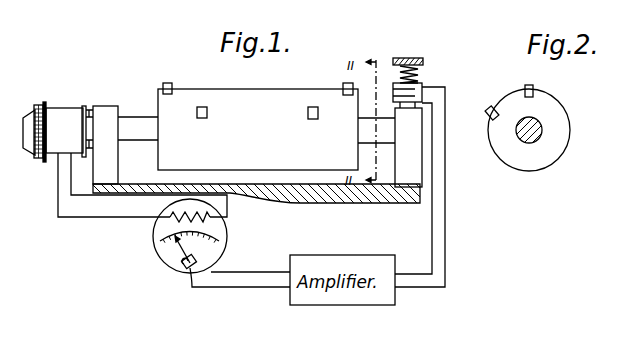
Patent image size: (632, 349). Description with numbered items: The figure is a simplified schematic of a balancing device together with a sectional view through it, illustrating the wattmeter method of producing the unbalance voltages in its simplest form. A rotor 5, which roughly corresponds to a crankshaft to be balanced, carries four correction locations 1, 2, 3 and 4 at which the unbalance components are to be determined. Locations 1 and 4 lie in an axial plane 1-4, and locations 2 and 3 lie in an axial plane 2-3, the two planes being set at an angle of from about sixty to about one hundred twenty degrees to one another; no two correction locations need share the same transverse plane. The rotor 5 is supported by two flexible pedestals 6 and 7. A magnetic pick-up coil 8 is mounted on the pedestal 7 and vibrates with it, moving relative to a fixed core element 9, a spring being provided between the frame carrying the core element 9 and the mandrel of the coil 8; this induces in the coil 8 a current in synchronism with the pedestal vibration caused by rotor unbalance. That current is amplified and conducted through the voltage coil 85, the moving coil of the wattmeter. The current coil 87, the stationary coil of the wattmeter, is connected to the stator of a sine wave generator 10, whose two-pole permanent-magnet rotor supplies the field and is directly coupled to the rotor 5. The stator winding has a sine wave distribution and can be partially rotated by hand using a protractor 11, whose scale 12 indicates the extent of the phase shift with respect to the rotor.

In FIG. 1, the correction location 1 is at (172, 91).
In FIG. 1, the correction location 2 is at (207, 113).
In FIG. 1, the correction location 3 is at (318, 113).
In FIG. 1, the correction location 4 is at (343, 87).
In FIG. 1, the rotor 5 is at (165, 107).
In FIG. 2, the rotor 5 is at (550, 111).
In FIG. 1, the flexible pedestal 6 is at (108, 165).
In FIG. 1, the flexible pedestal 7 is at (412, 163).
In FIG. 1, the magnetic pick-up coil 8 is at (423, 90).
In FIG. 1, the fixed core element 9 is at (413, 83).
In FIG. 1, the sine wave generator 10 is at (60, 118).
In FIG. 1, the protractor 11 is at (28, 118).
In FIG. 1, the scale 12 is at (33, 110).
In FIG. 1, the voltage coil 85 is at (178, 284).
In FIG. 1, the current coil 87 is at (170, 215).
In FIG. 2, the axial plane 1-4 is at (535, 86).
In FIG. 2, the axial plane 2-3 is at (488, 112).